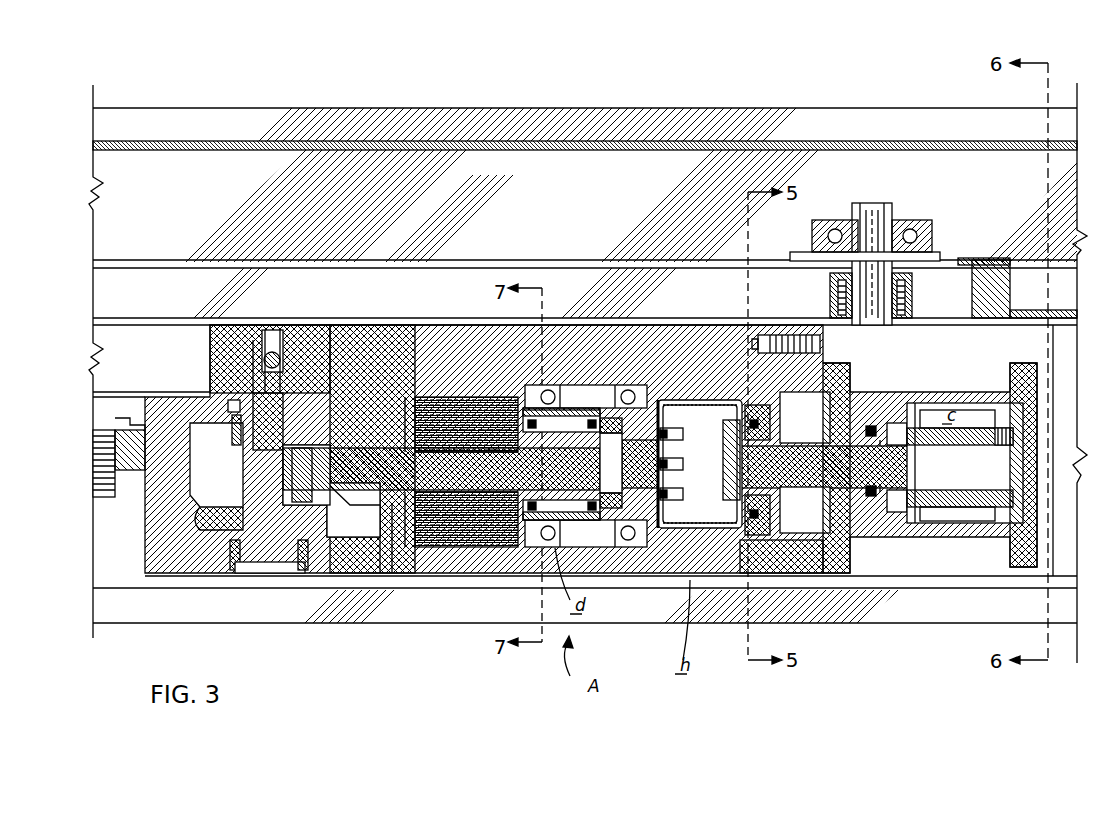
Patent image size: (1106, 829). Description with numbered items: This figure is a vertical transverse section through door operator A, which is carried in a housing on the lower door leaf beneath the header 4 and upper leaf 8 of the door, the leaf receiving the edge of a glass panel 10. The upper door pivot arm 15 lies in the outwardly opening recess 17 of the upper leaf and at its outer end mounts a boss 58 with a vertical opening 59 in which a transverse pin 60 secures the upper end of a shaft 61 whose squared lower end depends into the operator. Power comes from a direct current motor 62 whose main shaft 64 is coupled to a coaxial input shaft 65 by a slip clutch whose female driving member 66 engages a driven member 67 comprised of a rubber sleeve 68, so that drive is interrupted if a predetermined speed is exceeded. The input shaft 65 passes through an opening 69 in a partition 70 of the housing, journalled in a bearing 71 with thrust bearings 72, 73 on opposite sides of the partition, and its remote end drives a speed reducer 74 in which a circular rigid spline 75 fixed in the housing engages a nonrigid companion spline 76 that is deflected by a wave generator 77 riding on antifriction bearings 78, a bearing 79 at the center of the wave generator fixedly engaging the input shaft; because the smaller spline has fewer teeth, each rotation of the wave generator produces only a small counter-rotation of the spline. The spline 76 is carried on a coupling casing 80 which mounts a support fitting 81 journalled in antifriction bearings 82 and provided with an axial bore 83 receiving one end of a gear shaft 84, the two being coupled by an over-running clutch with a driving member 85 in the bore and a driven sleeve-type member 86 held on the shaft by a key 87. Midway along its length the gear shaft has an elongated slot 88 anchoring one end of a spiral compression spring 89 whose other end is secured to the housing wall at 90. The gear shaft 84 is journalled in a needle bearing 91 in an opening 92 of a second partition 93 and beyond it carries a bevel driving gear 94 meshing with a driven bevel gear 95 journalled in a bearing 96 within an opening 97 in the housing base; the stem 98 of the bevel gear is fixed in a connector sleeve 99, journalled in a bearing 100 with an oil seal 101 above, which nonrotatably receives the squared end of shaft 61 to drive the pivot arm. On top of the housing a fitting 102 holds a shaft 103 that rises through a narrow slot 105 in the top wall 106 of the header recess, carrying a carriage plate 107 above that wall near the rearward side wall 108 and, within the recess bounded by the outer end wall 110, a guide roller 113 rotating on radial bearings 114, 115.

The header 4 is at (93, 233).
The upper leaf 8 is at (1062, 355).
The glass panel 10 is at (958, 625).
The upper door pivot arm 15 is at (93, 385).
The recess 17 is at (93, 400).
The boss 58 is at (322, 330).
The vertical opening 59 is at (298, 328).
The transverse pin 60 is at (272, 340).
The shaft 61 is at (258, 335).
The motor 62 is at (1068, 360).
The main shaft 64 is at (1002, 495).
The input shaft 65 is at (805, 510).
The female driving member 66 is at (967, 436).
The driven member 67 is at (967, 495).
The rubber sleeve 68 is at (935, 495).
The opening 69 is at (890, 430).
The partition 70 is at (890, 423).
The bearing 71 is at (866, 424).
The thrust bearing 72 is at (930, 398).
The thrust bearing 73 is at (785, 422).
The speed reducer 74 is at (692, 420).
The circular rigid spline 75 is at (783, 542).
The companion spline 76 is at (704, 464).
The wave generator 77 is at (805, 417).
The antifriction bearings 78 is at (736, 420).
The bearing 79 is at (785, 481).
The coupling casing 80 is at (681, 464).
The support fitting 81 is at (592, 548).
The antifriction bearings 82 is at (625, 552).
The axial bore 83 is at (622, 470).
The gear shaft 84 is at (490, 548).
The driving member 85 is at (518, 548).
The driven sleeve-type member 86 is at (586, 535).
The key 87 is at (586, 396).
The elongated slot 88 is at (458, 398).
The compression spring 89 is at (465, 440).
The housing wall attachment 90 is at (440, 548).
The needle bearing 91 is at (400, 548).
The opening 92 is at (385, 573).
The partition 93 is at (395, 408).
The bevel driving gear 94 is at (340, 500).
The driven bevel gear 95 is at (200, 515).
The bearing 96 is at (300, 575).
The opening 97 is at (225, 575).
The stem 98 is at (310, 475).
The connector sleeve 99 is at (240, 466).
The bearing 100 is at (232, 420).
The oil seal 101 is at (232, 400).
The fitting 102 is at (905, 342).
The shaft 103 is at (890, 205).
The narrow slot 105 is at (796, 260).
The top wall 106 is at (995, 262).
The carriage plate 107 is at (935, 257).
The rearward side wall 108 is at (93, 302).
The outer end wall 110 is at (1010, 316).
The guide roller 113 is at (830, 278).
The radial bearing 114 is at (838, 309).
The radial bearing 115 is at (838, 294).